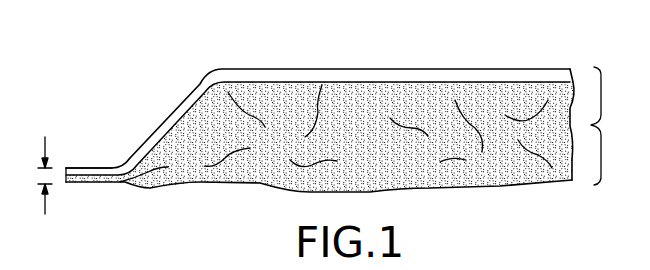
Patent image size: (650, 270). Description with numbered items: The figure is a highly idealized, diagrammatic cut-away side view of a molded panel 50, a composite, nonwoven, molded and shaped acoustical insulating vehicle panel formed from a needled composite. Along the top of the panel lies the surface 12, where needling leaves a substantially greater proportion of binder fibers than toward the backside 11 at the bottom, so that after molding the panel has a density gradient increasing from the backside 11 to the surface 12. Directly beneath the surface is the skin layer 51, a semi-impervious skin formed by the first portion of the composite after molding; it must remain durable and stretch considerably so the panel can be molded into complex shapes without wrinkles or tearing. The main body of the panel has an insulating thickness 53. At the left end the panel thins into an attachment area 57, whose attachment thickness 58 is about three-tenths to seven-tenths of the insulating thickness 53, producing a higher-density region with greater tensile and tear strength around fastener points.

The molded panel 50 is at (433, 63).
The surface 12 is at (283, 68).
The skin layer 51 is at (530, 78).
The backside 11 is at (465, 183).
The insulating thickness 53 is at (615, 126).
The attachment area 57 is at (82, 166).
The attachment thickness 58 is at (29, 175).